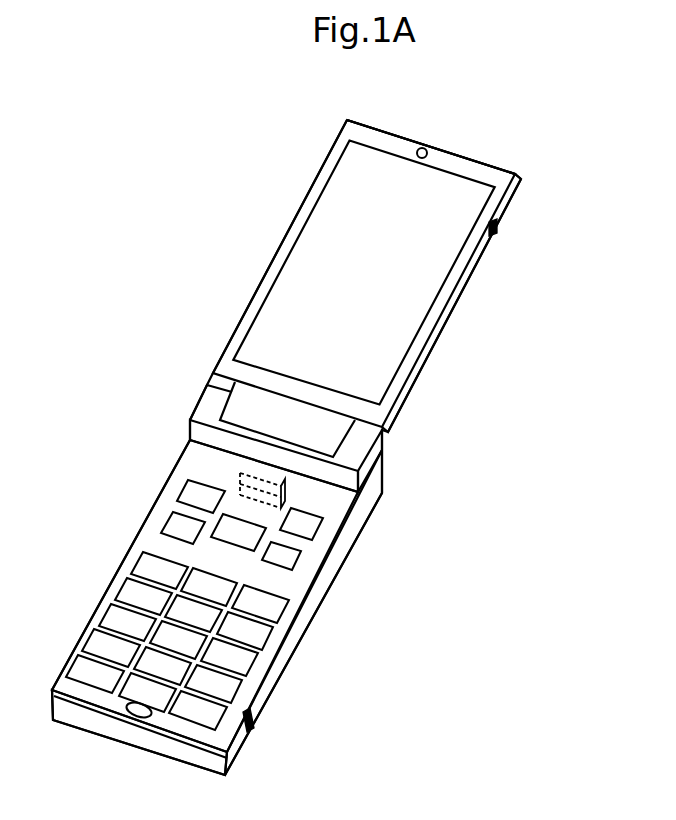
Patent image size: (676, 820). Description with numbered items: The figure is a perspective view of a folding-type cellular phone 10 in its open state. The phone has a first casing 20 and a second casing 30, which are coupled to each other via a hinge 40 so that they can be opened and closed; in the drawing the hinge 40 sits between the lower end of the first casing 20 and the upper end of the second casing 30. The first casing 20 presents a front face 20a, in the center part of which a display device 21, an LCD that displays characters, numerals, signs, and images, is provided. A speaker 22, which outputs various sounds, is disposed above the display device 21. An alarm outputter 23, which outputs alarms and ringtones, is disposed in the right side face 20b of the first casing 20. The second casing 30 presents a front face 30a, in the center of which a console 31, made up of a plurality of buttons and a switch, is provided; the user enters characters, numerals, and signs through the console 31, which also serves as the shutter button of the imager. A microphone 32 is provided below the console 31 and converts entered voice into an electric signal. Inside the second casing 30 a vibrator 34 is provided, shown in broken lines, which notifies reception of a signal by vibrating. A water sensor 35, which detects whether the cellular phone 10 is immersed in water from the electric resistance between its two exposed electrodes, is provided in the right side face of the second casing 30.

The cellular phone 10 is at (212, 212).
The first casing 20 is at (442, 347).
The front face 20a is at (513, 174).
The right side face 20b is at (458, 298).
The display device 21 is at (348, 172).
The speaker 22 is at (428, 152).
The alarm outputter 23 is at (513, 207).
The second casing 30 is at (343, 567).
The front face 30a is at (335, 512).
The console 31 is at (253, 635).
The microphone 32 is at (137, 703).
The vibrator 34 is at (238, 473).
The water sensor 35 is at (248, 716).
The hinge 40 is at (316, 425).